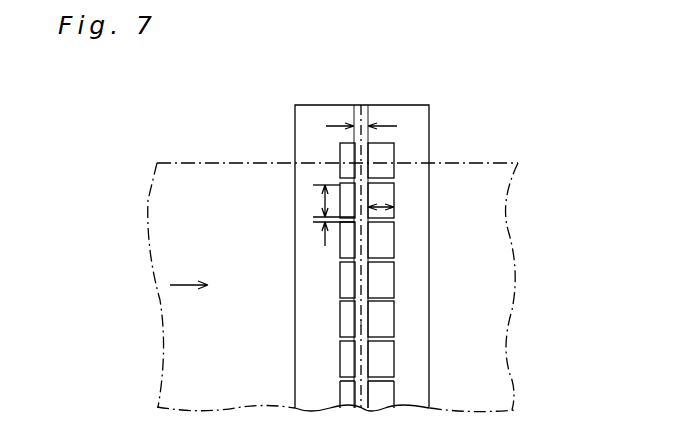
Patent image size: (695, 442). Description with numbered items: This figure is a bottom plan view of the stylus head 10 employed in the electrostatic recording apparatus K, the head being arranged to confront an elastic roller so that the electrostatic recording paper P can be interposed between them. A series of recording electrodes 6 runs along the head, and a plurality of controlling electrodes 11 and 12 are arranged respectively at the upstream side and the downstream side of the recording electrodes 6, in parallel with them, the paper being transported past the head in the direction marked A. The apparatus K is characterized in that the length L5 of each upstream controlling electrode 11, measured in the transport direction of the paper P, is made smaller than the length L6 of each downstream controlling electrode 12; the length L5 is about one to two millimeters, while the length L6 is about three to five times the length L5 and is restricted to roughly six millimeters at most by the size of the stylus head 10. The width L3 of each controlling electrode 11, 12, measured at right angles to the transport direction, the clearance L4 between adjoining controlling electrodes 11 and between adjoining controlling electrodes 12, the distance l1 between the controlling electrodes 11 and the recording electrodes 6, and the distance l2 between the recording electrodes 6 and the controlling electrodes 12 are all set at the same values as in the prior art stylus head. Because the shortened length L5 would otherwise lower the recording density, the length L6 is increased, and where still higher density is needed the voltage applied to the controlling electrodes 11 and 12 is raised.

The stylus head 10 is at (432, 113).
The controlling electrodes 11 is at (348, 281).
The controlling electrodes 12 is at (385, 287).
The recording electrodes 6 is at (362, 323).
The electrostatic recording apparatus K is at (450, 63).
The electrostatic recording paper P is at (488, 173).
The direction of movement A is at (500, 287).
The width of controlling electrodes L3 is at (325, 200).
The clearance between adjoining controlling electrodes L4 is at (314, 223).
The length of upstream controlling electrodes L5 is at (351, 208).
The length of downstream controlling electrodes L6 is at (395, 207).
The distance between controlling electrodes and recording electrodes l1 is at (357, 125).
The distance between recording electrodes and controlling electrodes l2 is at (366, 125).